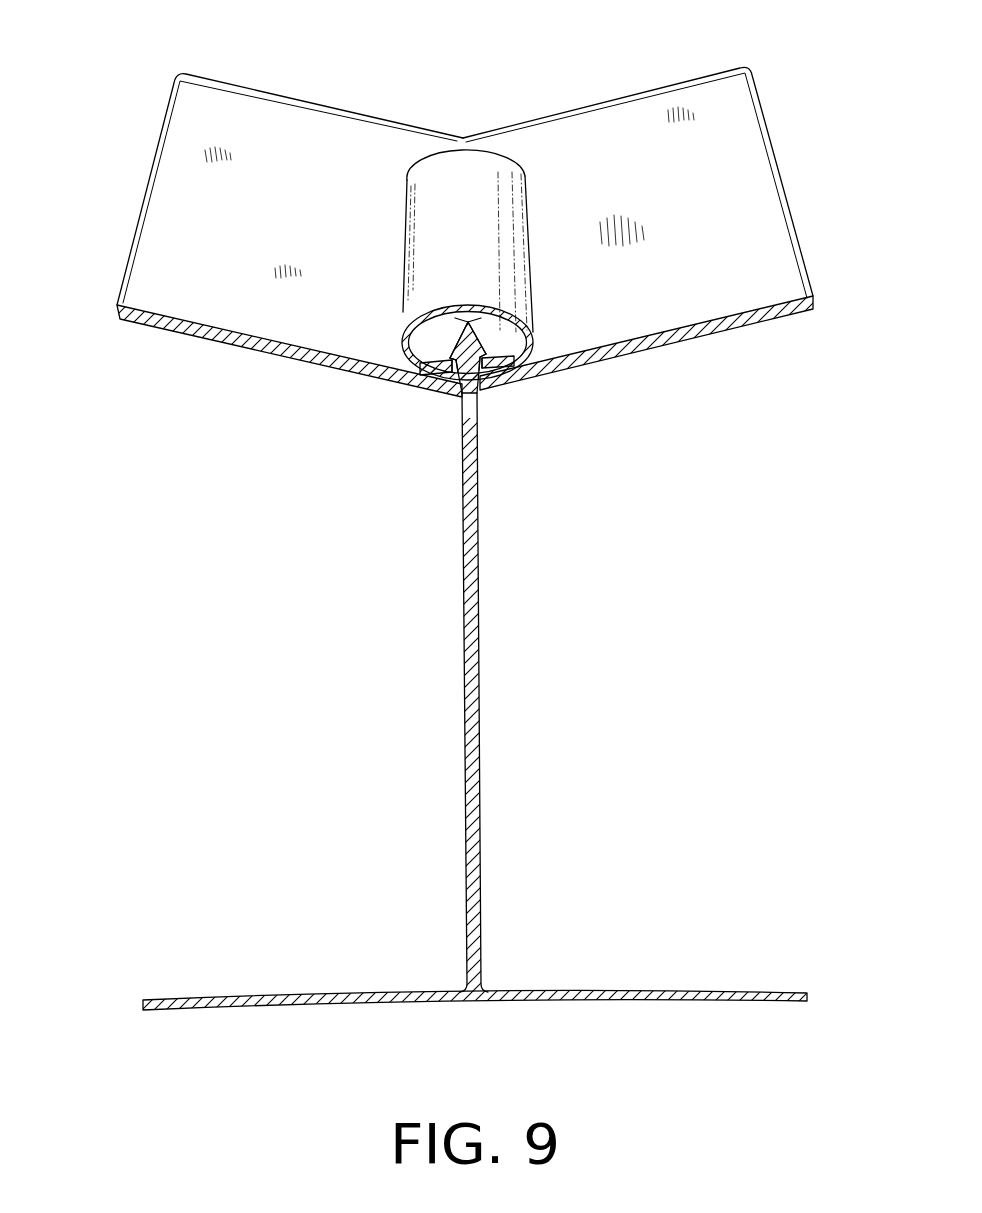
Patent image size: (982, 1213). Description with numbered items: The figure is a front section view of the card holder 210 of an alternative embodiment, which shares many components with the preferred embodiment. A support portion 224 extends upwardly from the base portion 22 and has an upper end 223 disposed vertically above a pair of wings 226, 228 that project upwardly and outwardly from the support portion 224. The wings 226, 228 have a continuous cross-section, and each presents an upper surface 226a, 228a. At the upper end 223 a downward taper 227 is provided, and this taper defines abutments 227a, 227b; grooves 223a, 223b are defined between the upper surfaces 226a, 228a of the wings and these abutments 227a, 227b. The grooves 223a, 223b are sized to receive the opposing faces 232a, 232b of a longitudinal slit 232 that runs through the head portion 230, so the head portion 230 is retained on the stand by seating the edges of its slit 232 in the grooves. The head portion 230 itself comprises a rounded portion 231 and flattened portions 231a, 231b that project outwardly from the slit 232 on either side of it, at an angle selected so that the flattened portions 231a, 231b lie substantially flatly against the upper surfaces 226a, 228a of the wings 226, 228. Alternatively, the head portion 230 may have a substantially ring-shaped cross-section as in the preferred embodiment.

The base portion 22 is at (619, 990).
The card holder 210 is at (269, 394).
The upper end 223 is at (420, 306).
The groove 223a is at (443, 402).
The groove 223b is at (490, 397).
The support portion 224 is at (470, 710).
The wing 226 is at (653, 320).
The upper surface 226a is at (678, 202).
The downward taper 227 is at (430, 370).
The abutment 227a is at (436, 403).
The abutment 227b is at (530, 370).
The wing 228 is at (183, 217).
The upper surface 228a is at (292, 237).
The head portion 230 is at (513, 163).
The rounded portion 231 is at (445, 175).
The flattened portion 231a is at (424, 397).
The flattened portion 231b is at (483, 377).
The longitudinal slit 232 is at (478, 400).
The opposing face 232a is at (462, 420).
The opposing face 232b is at (505, 310).